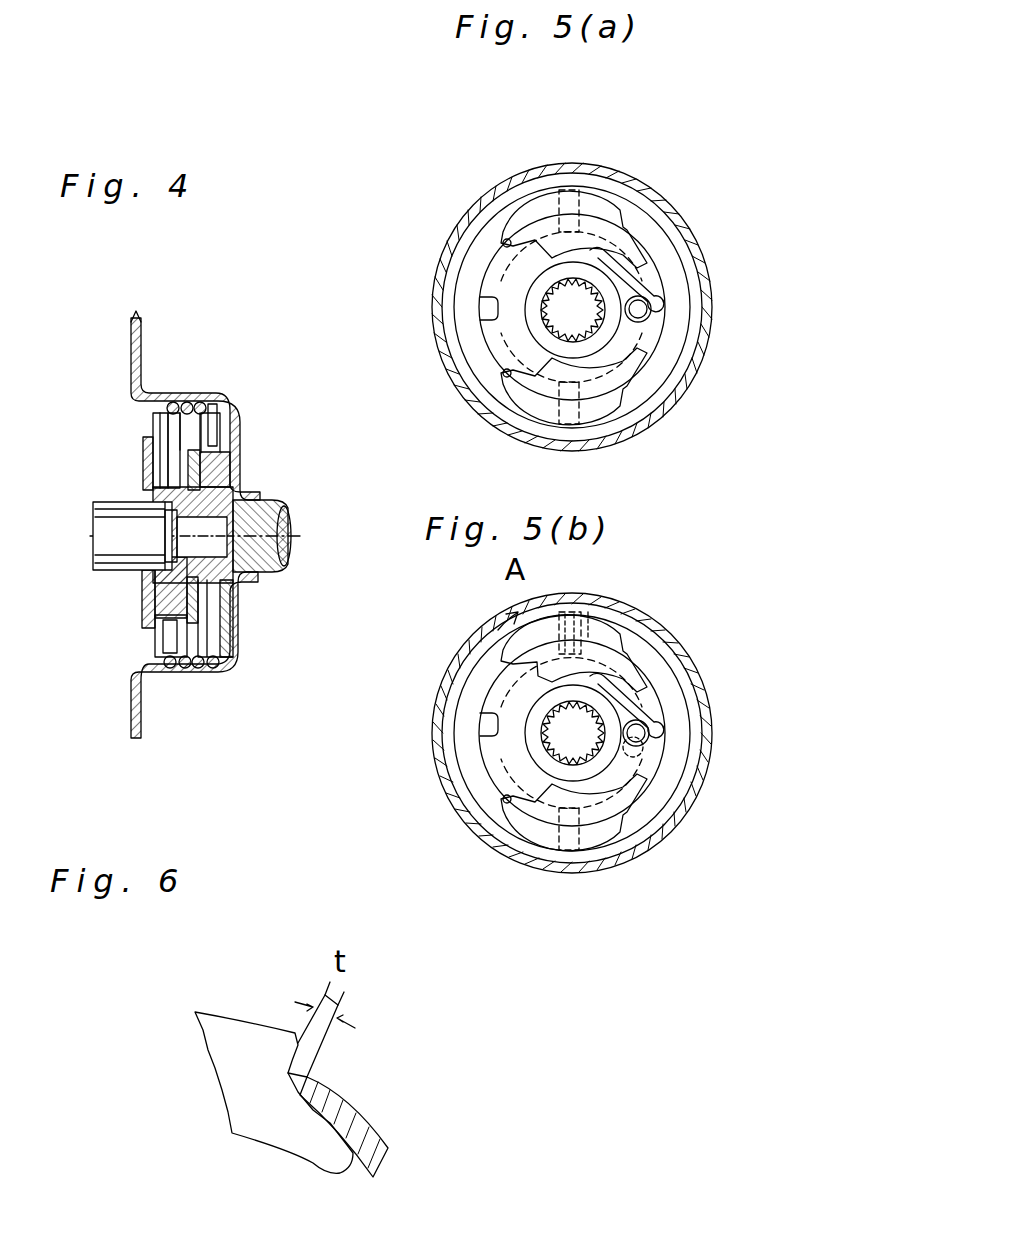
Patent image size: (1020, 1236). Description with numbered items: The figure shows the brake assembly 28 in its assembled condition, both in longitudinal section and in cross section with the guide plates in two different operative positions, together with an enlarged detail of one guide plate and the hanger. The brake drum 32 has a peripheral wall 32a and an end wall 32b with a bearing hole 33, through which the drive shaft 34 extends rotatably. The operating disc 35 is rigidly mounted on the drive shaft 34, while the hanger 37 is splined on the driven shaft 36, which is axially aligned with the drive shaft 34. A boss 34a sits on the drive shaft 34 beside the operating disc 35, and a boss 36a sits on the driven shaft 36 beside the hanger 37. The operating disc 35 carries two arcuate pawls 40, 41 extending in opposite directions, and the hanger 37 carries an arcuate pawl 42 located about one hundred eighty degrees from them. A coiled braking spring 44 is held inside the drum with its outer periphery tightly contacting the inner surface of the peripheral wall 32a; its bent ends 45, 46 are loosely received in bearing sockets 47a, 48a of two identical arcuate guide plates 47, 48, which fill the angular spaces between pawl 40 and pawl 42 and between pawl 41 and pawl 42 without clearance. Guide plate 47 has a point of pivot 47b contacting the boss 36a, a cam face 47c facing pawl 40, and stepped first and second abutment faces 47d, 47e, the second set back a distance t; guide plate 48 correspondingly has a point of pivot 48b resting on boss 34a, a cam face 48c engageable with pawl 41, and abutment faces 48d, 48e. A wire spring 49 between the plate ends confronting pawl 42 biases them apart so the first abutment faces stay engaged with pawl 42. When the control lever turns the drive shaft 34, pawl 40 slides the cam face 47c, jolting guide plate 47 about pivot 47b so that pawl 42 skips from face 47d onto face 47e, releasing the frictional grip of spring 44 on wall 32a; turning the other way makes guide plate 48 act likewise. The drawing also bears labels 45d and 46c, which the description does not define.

In FIG. 4, the brake assembly 28 is at (226, 383).
In FIG. 5A, the brake assembly 28 is at (455, 204).
In FIG. 5B, the brake assembly 28 is at (452, 647).
In FIG. 4, the brake drum 32 is at (178, 395).
In FIG. 5A, the brake drum 32 is at (714, 361).
In FIG. 5B, the brake drum 32 is at (709, 781).
In FIG. 4, the peripheral wall 32a is at (165, 680).
In FIG. 5A, the peripheral wall 32a is at (440, 295).
In FIG. 5B, the peripheral wall 32a is at (452, 740).
In FIG. 4, the end wall 32b is at (238, 620).
In FIG. 4, the bearing hole 33 is at (240, 585).
In FIG. 4, the drive shaft 34 is at (278, 550).
In FIG. 4, the boss 34a is at (254, 498).
In FIG. 5A, the boss 34a is at (560, 346).
In FIG. 5B, the boss 34a is at (571, 733).
In FIG. 4, the operating disc 35 is at (238, 655).
In FIG. 5A, the operating disc 35 is at (470, 325).
In FIG. 4, the driven shaft 36 is at (108, 540).
In FIG. 4, the boss 36a is at (170, 567).
In FIG. 4, the hanger 37 is at (142, 452).
In FIG. 5A, the hanger 37 is at (692, 317).
In FIG. 5A, the arcuate pawl 40 is at (452, 276).
In FIG. 5B, the arcuate pawl 40 is at (470, 716).
In FIG. 5A, the arcuate pawl 41 is at (498, 335).
In FIG. 5B, the arcuate pawl 41 is at (478, 790).
In FIG. 4, the arcuate pawl 42 is at (158, 435).
In FIG. 5A, the arcuate pawl 42 is at (655, 302).
In FIG. 5B, the arcuate pawl 42 is at (653, 735).
In FIG. 6, the arcuate pawl 42 is at (358, 1127).
In FIG. 4, the coiled braking spring 44 is at (170, 404).
In FIG. 5A, the coiled braking spring 44 is at (700, 386).
In FIG. 5B, the coiled braking spring 44 is at (690, 800).
In FIG. 4, the end of spring 45 is at (184, 640).
In FIG. 5A, the end of spring 45 is at (581, 186).
In FIG. 5B, the end of spring 45 is at (590, 636).
In FIG. 5A, the pin end 45d is at (680, 400).
In FIG. 4, the end of spring 46 is at (230, 410).
In FIG. 5A, the end of spring 46 is at (575, 424).
In FIG. 5B, the end of spring 46 is at (555, 860).
In FIG. 5B, the lug portion 46c is at (500, 832).
In FIG. 4, the guide plate 47 is at (158, 645).
In FIG. 5A, the guide plate 47 is at (599, 194).
In FIG. 5B, the guide plate 47 is at (608, 642).
In FIG. 6, the guide plate 47 is at (225, 1012).
In FIG. 4, the bearing socket 47a is at (190, 668).
In FIG. 5A, the bearing socket 47a is at (563, 188).
In FIG. 5B, the bearing socket 47a is at (573, 633).
In FIG. 5A, the point of pivot 47b is at (502, 262).
In FIG. 5A, the cam face 47c is at (503, 240).
In FIG. 5B, the cam face 47c is at (507, 647).
In FIG. 5A, the first abutment face 47d is at (642, 226).
In FIG. 5B, the first abutment face 47d is at (660, 668).
In FIG. 6, the first abutment face 47d is at (310, 1072).
In FIG. 5A, the second abutment face 47e is at (626, 214).
In FIG. 5B, the second abutment face 47e is at (646, 648).
In FIG. 6, the second abutment face 47e is at (298, 1038).
In FIG. 4, the guide plate 48 is at (232, 458).
In FIG. 5A, the guide plate 48 is at (606, 420).
In FIG. 5B, the guide plate 48 is at (603, 842).
In FIG. 4, the bearing socket 48a is at (226, 436).
In FIG. 5A, the bearing socket 48a is at (545, 412).
In FIG. 5A, the point of pivot 48b is at (692, 345).
In FIG. 5A, the cam face 48c is at (520, 415).
In FIG. 5B, the first abutment face 48d is at (660, 822).
In FIG. 5A, the second abutment face 48e is at (626, 400).
In FIG. 5B, the second abutment face 48e is at (626, 830).
In FIG. 5A, the wire spring 49 is at (652, 285).
In FIG. 5B, the wire spring 49 is at (656, 720).